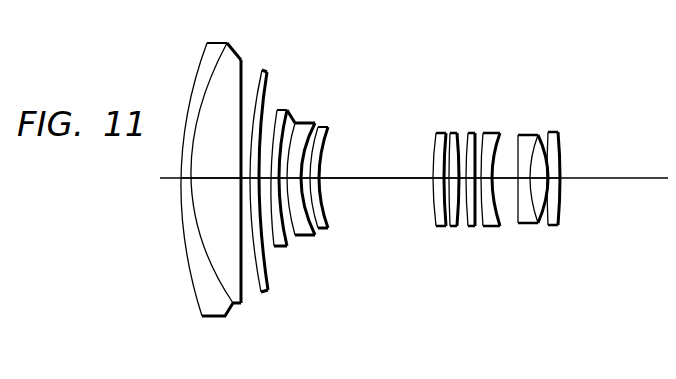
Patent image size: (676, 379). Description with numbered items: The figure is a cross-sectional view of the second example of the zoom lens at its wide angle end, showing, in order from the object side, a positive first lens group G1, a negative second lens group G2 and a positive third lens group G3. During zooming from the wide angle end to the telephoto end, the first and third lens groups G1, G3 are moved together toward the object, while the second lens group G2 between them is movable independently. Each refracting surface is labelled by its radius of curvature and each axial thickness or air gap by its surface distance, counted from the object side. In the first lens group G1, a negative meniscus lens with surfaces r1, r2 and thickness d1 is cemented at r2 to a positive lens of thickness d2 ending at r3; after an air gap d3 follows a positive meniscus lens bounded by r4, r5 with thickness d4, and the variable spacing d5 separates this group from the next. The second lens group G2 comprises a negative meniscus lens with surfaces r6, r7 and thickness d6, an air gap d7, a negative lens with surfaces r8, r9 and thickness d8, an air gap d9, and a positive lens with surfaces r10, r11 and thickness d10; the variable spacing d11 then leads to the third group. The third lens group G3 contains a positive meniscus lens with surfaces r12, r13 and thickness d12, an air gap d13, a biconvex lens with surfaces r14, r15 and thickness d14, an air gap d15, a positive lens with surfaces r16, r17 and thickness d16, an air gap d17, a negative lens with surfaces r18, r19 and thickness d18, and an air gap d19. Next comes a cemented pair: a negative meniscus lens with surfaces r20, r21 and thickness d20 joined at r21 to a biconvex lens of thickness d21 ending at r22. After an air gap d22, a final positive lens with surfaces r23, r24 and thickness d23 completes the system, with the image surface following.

The radius of curvature of first lens surface r1 is at (195, 78).
The radius of curvature of second lens surface r2 is at (218, 78).
The radius of curvature of third lens surface r3 is at (241, 58).
The radius of curvature of fourth lens surface r4 is at (260, 70).
The radius of curvature of fifth lens surface r5 is at (267, 72).
The radius of curvature of sixth lens surface r6 is at (277, 110).
The radius of curvature of seventh lens surface r7 is at (288, 112).
The radius of curvature of eighth lens surface r8 is at (296, 124).
The radius of curvature of ninth lens surface r9 is at (314, 124).
The radius of curvature of tenth lens surface r10 is at (322, 128).
The radius of curvature of eleventh lens surface r11 is at (329, 128).
The radius of curvature of twelfth lens surface r12 is at (434, 140).
The radius of curvature of thirteenth lens surface r13 is at (443, 133).
The radius of curvature of fourteenth lens surface r14 is at (451, 133).
The radius of curvature of fifteenth lens surface r15 is at (458, 133).
The radius of curvature of sixteenth lens surface r16 is at (468, 133).
The radius of curvature of seventeenth lens surface r17 is at (476, 133).
The radius of curvature of eighteenth lens surface r18 is at (485, 133).
The radius of curvature of nineteenth lens surface r19 is at (499, 133).
The radius of curvature of twentieth lens surface r20 is at (519, 135).
The radius of curvature of twenty-first lens surface r21 is at (539, 135).
The radius of curvature of twenty-second lens surface r22 is at (546, 150).
The radius of curvature of twenty-third lens surface r23 is at (552, 135).
The radius of curvature of twenty-fourth lens surface r24 is at (561, 162).
The lens surface distance d1 is at (184, 189).
The lens surface distance d2 is at (212, 190).
The lens surface distance d3 is at (245, 186).
The lens surface distance d4 is at (253, 190).
The lens surface distance d5 is at (268, 250).
The lens surface distance d6 is at (285, 247).
The lens surface distance d7 is at (297, 234).
The lens surface distance d8 is at (308, 237).
The lens surface distance d9 is at (314, 206).
The lens surface distance d10 is at (325, 188).
The lens surface distance d11 is at (392, 182).
The lens surface distance d12 is at (440, 186).
The lens surface distance d13 is at (448, 202).
The lens surface distance d14 is at (453, 213).
The lens surface distance d15 is at (461, 224).
The lens surface distance d16 is at (470, 222).
The lens surface distance d17 is at (478, 227).
The lens surface distance d18 is at (488, 227).
The lens surface distance d19 is at (505, 185).
The lens surface distance d20 is at (522, 224).
The lens surface distance d21 is at (536, 226).
The lens surface distance d22 is at (548, 226).
The lens surface distance d23 is at (562, 194).
The first lens group G1 is at (268, 323).
The second lens group G2 is at (340, 323).
The third lens group G3 is at (560, 323).